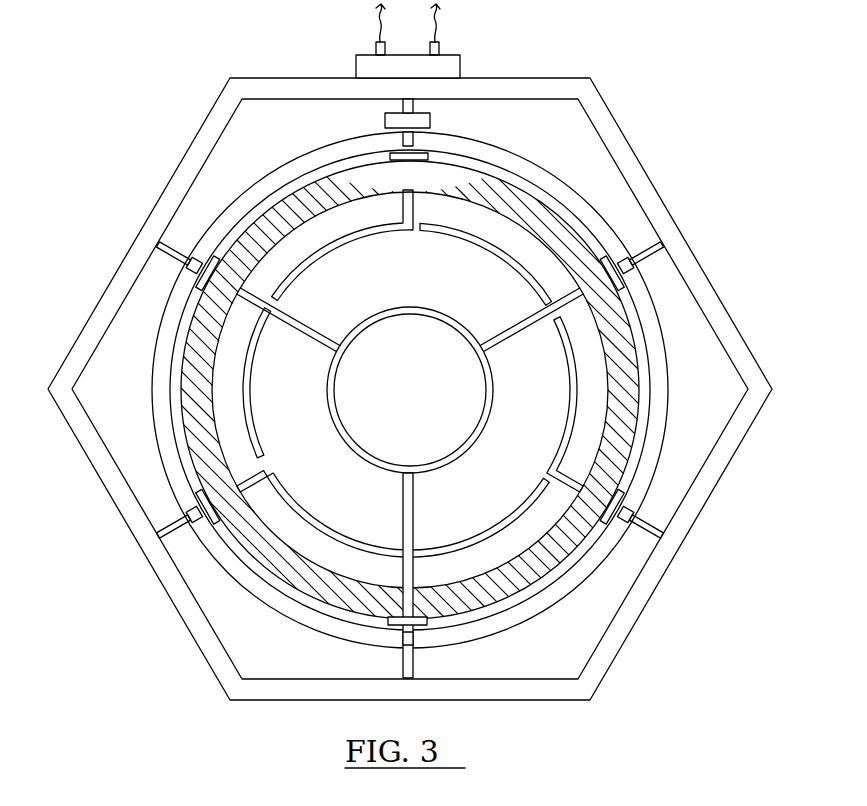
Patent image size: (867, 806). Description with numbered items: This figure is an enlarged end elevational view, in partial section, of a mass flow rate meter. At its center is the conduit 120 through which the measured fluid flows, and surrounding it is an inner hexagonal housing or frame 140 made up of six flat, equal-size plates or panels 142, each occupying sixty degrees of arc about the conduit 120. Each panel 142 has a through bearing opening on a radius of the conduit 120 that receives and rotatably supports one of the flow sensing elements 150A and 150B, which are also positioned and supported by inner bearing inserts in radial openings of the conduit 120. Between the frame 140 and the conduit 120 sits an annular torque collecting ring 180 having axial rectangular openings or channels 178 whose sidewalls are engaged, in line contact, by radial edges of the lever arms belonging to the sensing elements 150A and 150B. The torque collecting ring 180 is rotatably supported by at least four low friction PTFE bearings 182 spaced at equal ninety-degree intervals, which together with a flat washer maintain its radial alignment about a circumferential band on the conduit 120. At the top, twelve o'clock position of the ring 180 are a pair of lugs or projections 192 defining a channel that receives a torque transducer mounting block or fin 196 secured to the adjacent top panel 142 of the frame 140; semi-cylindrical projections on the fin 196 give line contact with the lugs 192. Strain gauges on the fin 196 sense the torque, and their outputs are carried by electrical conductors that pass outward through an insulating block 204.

The hexagonal housing or frame 140 is at (697, 113).
The plates or panels 142 is at (100, 300).
The torque collecting ring 180 is at (655, 425).
The conduit 120 is at (320, 592).
The flow sensing element 150A is at (563, 407).
The flow sensing element 150B is at (484, 250).
The axial rectangular openings or channels 178 is at (626, 258).
The low friction bearings 182 is at (232, 547).
The lugs or projections 192 is at (395, 117).
The torque transducer mounting block or fin 196 is at (412, 112).
The insulating block 204 is at (372, 70).